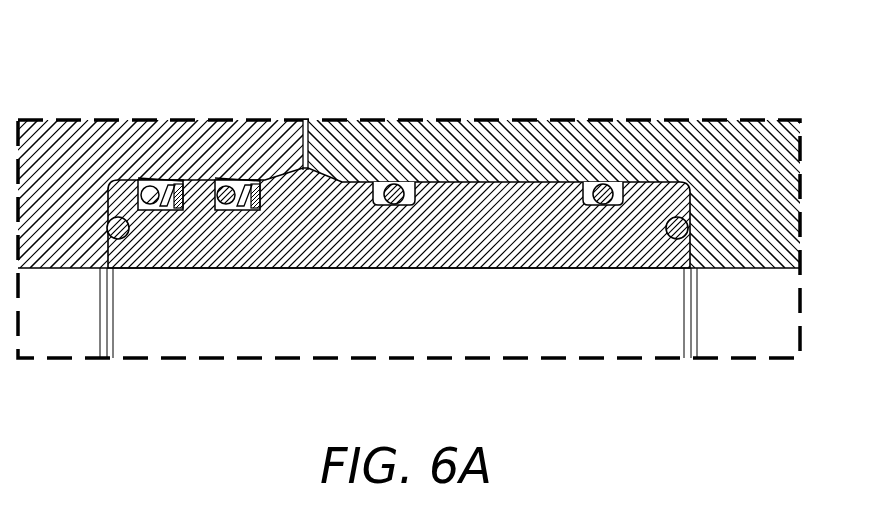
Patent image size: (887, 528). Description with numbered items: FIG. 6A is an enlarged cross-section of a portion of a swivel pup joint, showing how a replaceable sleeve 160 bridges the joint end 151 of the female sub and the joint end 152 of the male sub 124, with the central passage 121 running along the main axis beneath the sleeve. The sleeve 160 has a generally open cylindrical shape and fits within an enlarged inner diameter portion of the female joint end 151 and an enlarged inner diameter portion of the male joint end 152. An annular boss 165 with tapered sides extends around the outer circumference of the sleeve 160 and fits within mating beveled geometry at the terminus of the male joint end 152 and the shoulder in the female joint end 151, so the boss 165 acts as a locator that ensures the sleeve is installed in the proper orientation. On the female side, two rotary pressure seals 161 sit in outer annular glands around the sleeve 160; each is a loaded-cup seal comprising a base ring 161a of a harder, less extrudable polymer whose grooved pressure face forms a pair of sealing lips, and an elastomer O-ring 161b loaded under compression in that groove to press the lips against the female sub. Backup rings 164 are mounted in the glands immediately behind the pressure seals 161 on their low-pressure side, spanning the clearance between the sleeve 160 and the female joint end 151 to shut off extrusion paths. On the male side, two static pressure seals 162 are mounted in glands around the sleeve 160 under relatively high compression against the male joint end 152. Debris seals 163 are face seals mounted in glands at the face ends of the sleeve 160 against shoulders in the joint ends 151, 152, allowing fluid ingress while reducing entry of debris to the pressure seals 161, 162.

The male sub 124 is at (758, 138).
The joint end of female sub 151 is at (58, 136).
The joint end of male sub 152 is at (760, 217).
The annular boss 165 is at (306, 160).
The sleeve 160 is at (372, 243).
The pressure seals 162 is at (395, 188).
The pressure seals 161 is at (240, 214).
The base ring 161a is at (146, 184).
The O-ring 161b is at (167, 184).
The backup rings 164 is at (180, 184).
The debris seals 163 is at (126, 239).
The central passage 121 is at (82, 339).